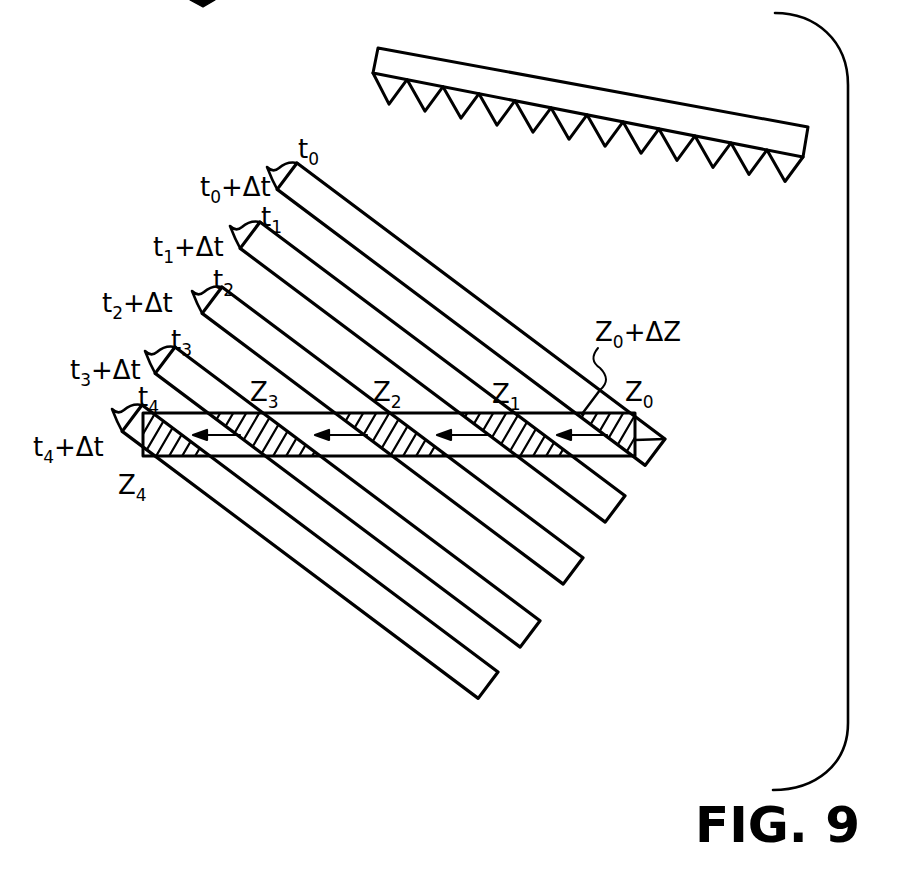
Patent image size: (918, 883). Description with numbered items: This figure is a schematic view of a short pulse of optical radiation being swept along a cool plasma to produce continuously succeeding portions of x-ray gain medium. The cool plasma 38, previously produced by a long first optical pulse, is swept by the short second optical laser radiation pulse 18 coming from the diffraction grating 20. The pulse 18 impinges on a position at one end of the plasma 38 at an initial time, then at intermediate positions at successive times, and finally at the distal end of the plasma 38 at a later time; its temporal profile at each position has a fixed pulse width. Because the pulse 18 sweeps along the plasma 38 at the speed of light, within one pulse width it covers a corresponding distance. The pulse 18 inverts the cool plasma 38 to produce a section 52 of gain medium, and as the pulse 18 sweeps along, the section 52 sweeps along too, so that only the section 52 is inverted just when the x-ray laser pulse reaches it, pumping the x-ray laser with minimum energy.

The short second optical laser radiation pulse 18 is at (460, 284).
The diffraction grating 20 is at (615, 88).
The cool plasma 38 is at (630, 458).
The section of gain medium 52 is at (665, 440).